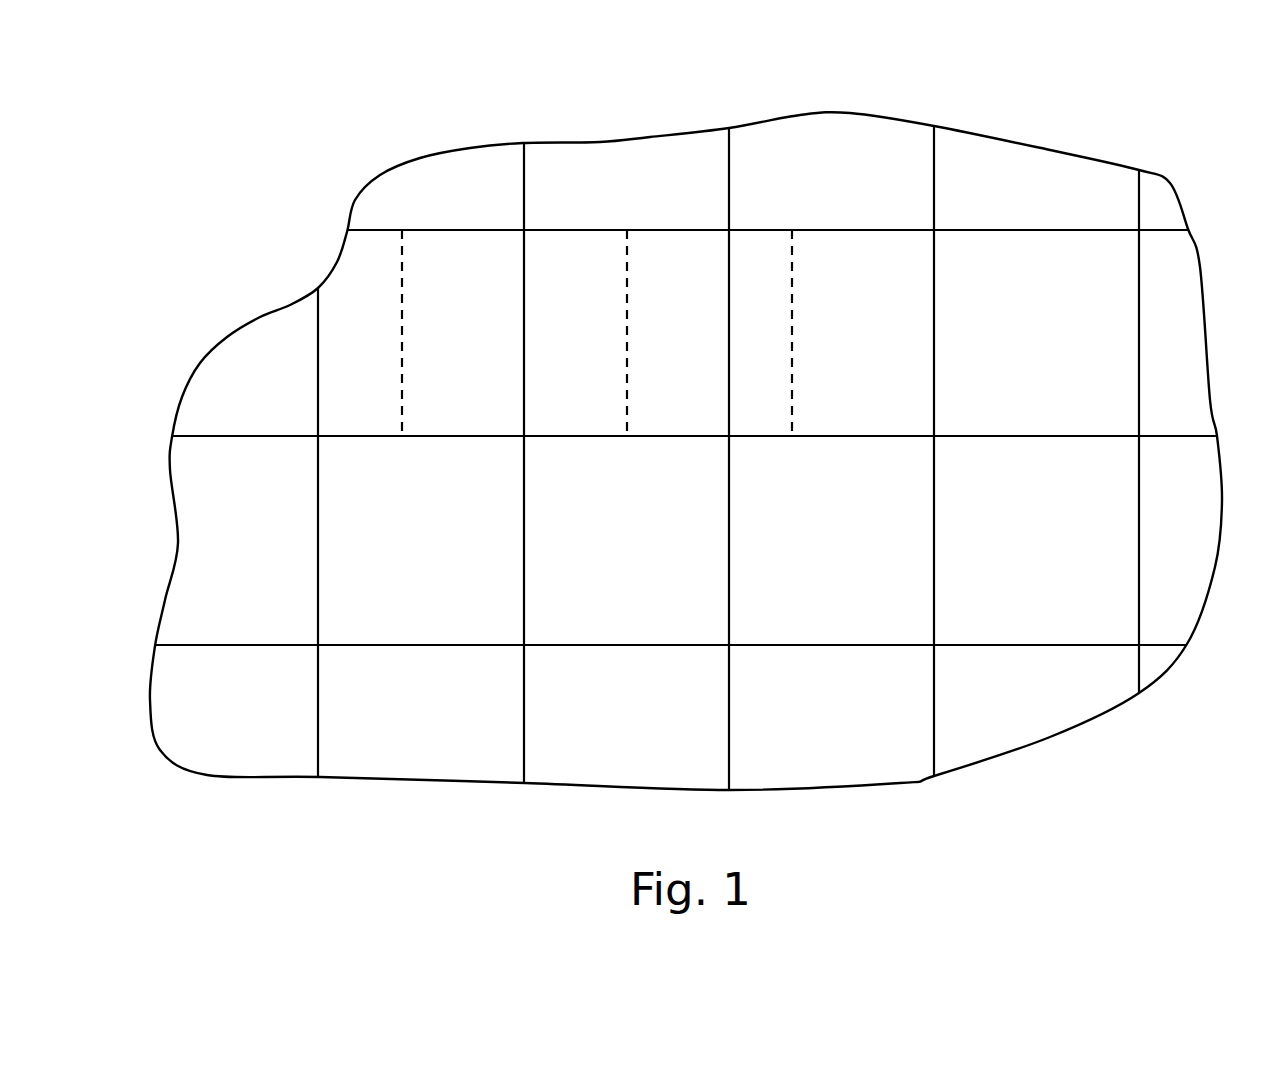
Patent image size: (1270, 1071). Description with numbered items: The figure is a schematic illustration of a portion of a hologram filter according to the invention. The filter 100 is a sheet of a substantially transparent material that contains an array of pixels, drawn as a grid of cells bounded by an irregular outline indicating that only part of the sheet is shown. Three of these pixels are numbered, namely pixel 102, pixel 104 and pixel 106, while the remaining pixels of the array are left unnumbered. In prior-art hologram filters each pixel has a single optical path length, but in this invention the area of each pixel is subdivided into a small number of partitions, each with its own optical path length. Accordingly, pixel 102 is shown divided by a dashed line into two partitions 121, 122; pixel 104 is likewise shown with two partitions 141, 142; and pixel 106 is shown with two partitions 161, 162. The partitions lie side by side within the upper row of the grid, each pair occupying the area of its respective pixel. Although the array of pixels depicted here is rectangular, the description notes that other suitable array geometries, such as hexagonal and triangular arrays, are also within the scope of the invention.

The filter 100 is at (1074, 763).
The pixel 102 is at (470, 257).
The pixel 104 is at (575, 252).
The pixel 106 is at (868, 260).
The partition 121 is at (386, 373).
The partition 122 is at (489, 373).
The partition 141 is at (601, 373).
The partition 142 is at (699, 373).
The partition 161 is at (784, 373).
The partition 162 is at (891, 373).